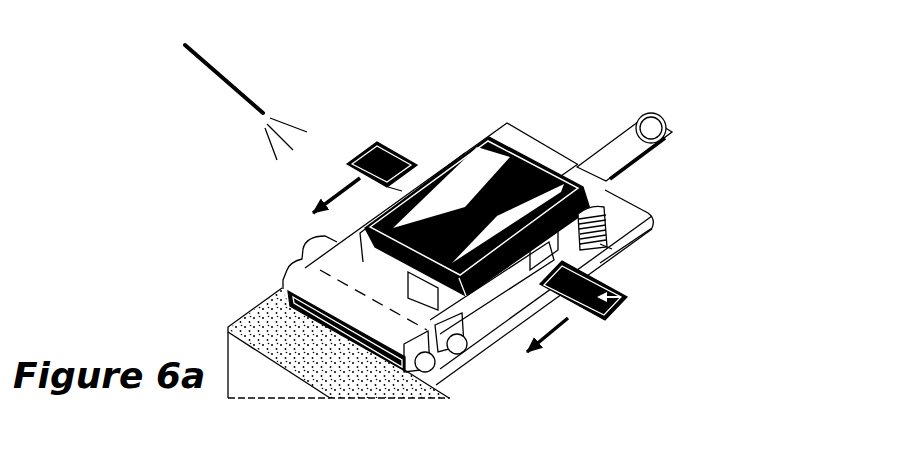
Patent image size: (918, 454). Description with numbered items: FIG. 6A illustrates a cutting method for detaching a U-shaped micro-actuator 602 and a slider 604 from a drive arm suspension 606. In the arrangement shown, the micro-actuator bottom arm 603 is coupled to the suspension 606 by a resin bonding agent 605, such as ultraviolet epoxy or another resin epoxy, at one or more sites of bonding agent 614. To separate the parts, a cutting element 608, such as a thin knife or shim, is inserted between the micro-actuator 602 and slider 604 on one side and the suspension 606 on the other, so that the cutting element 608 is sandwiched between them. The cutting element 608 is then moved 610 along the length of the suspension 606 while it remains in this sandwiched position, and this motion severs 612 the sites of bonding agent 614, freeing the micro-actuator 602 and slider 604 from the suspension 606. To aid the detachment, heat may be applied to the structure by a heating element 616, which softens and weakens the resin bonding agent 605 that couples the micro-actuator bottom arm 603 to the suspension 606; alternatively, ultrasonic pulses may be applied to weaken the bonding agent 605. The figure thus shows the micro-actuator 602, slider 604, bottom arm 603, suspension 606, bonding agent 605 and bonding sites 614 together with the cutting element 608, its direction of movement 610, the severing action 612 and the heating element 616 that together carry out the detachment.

The micro-actuator 602 is at (329, 251).
The micro-actuator bottom arm 603 is at (304, 269).
The slider 604 is at (508, 179).
The resin bonding agent 605 is at (274, 297).
The drive arm suspension 606 is at (377, 380).
The cutting element 608 is at (627, 301).
The movement of the cutting element 610 is at (558, 351).
The severing 612 is at (609, 230).
The sites of bonding agent 614 is at (612, 246).
The heating element 616 is at (222, 54).